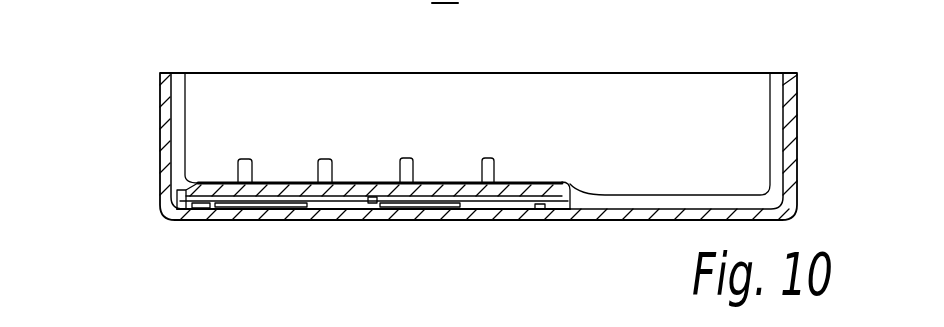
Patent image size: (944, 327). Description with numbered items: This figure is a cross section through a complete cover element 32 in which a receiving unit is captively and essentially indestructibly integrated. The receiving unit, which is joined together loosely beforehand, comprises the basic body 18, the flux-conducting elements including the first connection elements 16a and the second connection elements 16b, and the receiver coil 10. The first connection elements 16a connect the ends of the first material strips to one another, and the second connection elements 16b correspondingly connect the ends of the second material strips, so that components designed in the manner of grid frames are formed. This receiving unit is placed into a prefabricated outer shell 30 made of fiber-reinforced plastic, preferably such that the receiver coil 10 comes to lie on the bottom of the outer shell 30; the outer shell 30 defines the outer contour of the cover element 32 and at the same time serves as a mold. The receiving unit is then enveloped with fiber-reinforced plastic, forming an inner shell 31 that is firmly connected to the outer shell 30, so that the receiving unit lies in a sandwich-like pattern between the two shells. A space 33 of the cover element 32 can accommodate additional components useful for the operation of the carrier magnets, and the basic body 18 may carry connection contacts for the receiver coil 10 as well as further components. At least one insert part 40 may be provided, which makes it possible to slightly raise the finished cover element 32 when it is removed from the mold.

The receiver coil 10 is at (265, 205).
The first connection elements 16a is at (202, 202).
The second connection elements 16b is at (543, 210).
The basic body 18 is at (372, 193).
The outer shell 30 is at (447, 211).
The inner shell 31 is at (534, 182).
The cover element 32 is at (160, 147).
The space 33 is at (673, 143).
The insert part 40 is at (325, 165).